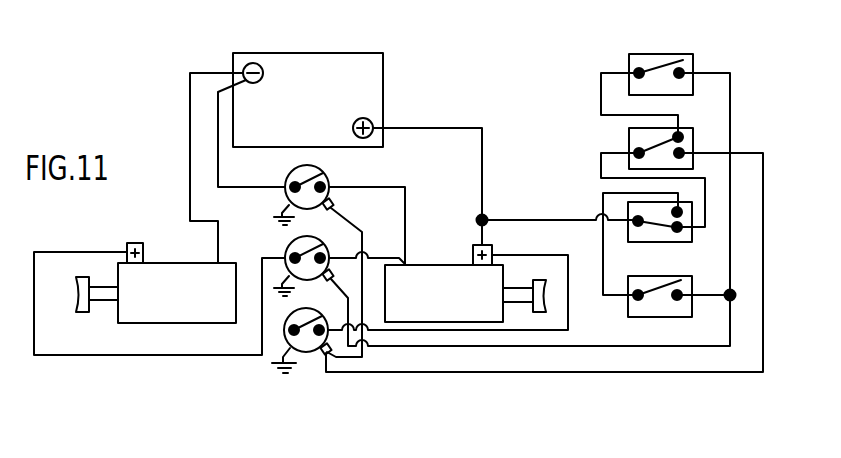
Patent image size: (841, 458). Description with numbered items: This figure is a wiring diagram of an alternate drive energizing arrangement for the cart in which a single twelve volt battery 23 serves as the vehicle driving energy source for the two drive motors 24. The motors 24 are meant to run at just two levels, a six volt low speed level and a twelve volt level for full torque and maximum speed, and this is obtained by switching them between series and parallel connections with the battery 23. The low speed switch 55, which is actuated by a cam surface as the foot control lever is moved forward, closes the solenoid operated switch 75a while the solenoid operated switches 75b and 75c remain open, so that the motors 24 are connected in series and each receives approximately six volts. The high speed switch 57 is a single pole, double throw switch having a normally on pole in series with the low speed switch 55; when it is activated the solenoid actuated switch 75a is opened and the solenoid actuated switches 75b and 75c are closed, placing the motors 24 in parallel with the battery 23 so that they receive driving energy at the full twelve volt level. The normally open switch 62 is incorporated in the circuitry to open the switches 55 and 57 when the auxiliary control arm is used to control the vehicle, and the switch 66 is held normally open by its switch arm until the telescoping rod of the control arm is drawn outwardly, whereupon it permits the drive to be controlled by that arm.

The twelve volt battery 23 is at (358, 54).
The motors 24 is at (171, 270).
The low speed switch 55 is at (698, 58).
The high speed switch 57 is at (661, 162).
The normally open switch 62 is at (671, 243).
The switch 66 is at (681, 318).
The solenoid operated switch 75a is at (286, 244).
The solenoid operated switch 75b is at (306, 354).
The solenoid operated switch 75c is at (328, 176).